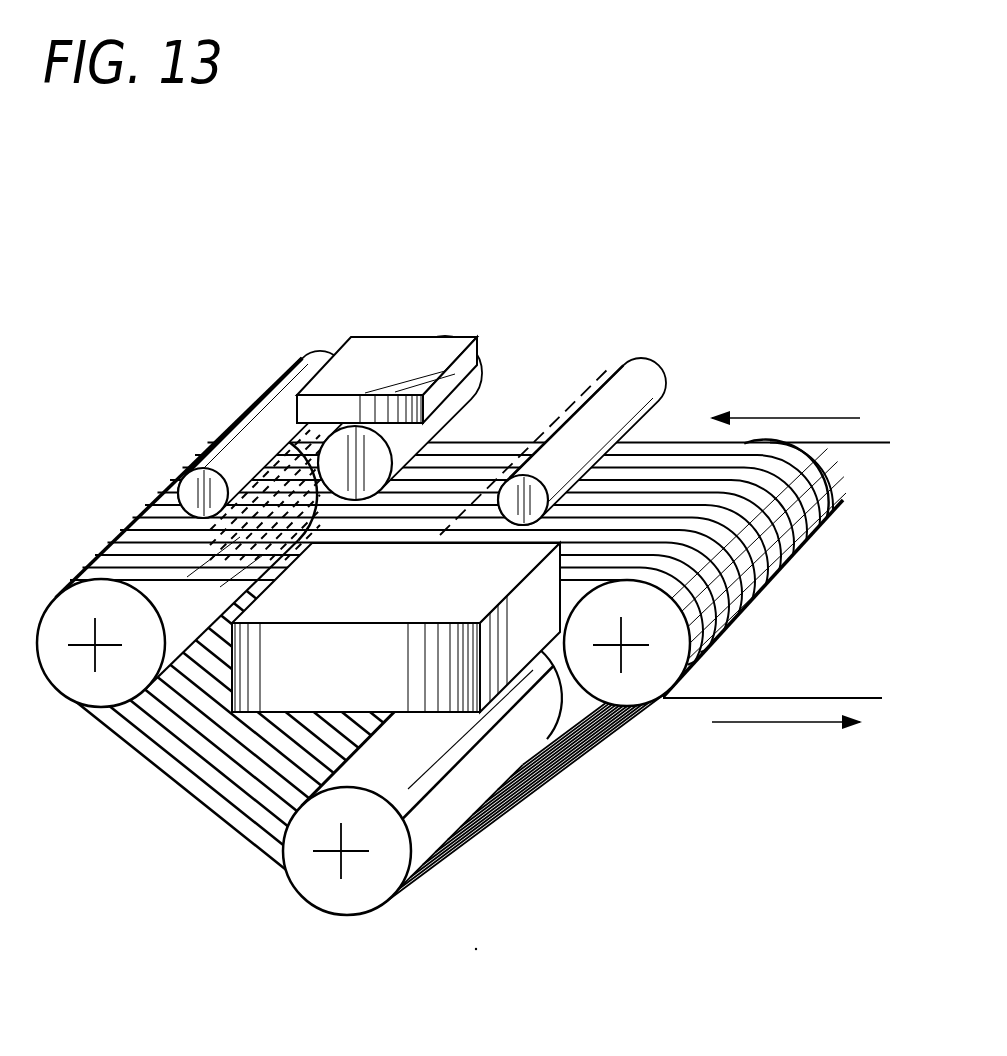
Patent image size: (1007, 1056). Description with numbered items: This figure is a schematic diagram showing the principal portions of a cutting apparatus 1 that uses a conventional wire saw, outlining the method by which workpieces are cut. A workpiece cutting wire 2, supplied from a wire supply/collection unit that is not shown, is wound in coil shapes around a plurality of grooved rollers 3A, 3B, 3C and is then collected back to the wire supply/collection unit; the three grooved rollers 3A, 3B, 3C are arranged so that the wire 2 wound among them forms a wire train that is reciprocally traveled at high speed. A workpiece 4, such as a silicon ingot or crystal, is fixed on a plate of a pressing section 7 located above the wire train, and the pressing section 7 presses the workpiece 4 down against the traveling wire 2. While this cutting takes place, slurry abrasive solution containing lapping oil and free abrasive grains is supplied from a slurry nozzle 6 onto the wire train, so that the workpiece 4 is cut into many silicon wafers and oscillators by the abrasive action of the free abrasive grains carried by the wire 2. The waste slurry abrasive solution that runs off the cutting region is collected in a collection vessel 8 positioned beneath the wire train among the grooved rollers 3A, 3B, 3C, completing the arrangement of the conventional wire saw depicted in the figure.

The image forming apparatus 1 is at (673, 199).
The workpiece cutting wire 2 is at (878, 440).
The grooved roller 3A is at (652, 673).
The grooved roller 3B is at (72, 675).
The grooved roller 3C is at (358, 905).
The workpiece 4 is at (473, 403).
The slurry nozzle 6 is at (273, 398).
The pressing section 7 is at (392, 362).
The collection vessel 8 is at (283, 675).